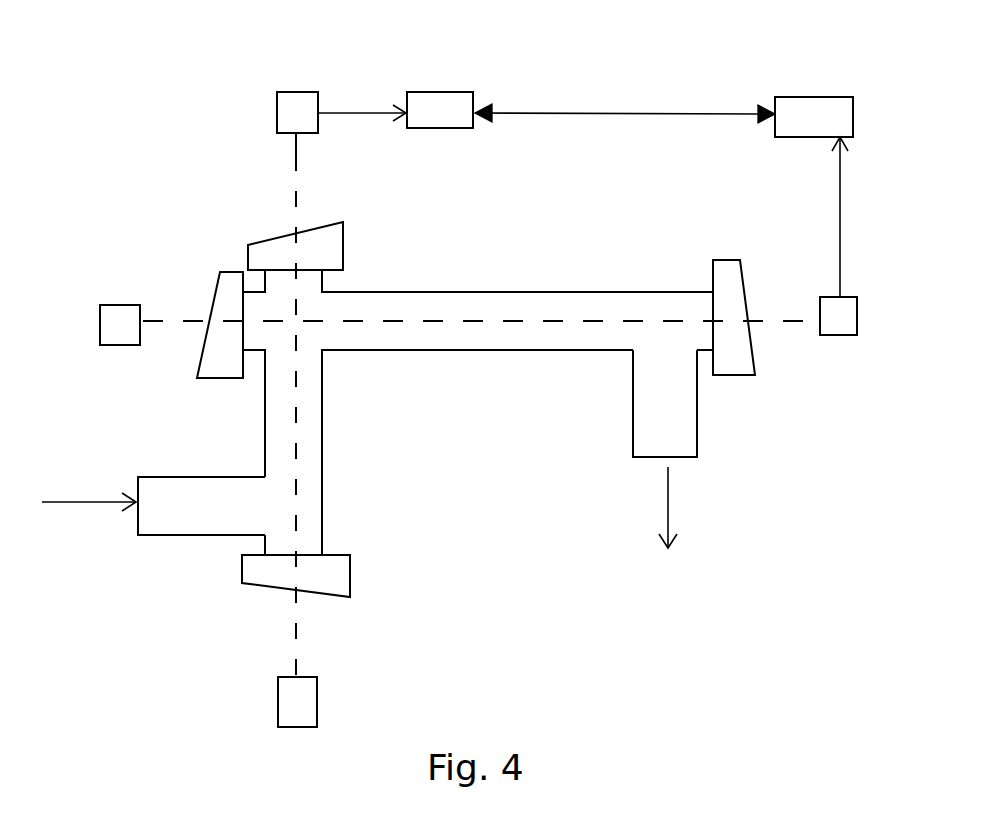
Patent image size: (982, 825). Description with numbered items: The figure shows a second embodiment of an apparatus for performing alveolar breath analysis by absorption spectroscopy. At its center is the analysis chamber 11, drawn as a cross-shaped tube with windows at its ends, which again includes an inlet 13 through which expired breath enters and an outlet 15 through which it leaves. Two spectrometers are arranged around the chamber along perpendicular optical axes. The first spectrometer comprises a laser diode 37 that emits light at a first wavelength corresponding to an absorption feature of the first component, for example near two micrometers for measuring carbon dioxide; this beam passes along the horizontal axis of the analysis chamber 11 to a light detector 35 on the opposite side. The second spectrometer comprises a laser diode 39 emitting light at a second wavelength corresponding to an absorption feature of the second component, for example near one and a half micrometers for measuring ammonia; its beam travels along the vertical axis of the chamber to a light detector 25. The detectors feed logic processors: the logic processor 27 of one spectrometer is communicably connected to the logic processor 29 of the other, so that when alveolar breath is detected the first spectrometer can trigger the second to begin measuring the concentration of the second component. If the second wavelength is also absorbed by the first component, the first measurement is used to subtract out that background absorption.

The analysis chamber 11 is at (480, 405).
The inlet 13 is at (146, 531).
The outlet 15 is at (700, 478).
The light detector 25 is at (300, 103).
The logic processor 27 is at (591, 82).
The logic processor 29 is at (825, 89).
The light detector 35 is at (852, 258).
The laser diode 37 is at (96, 302).
The laser diode 39 is at (345, 701).